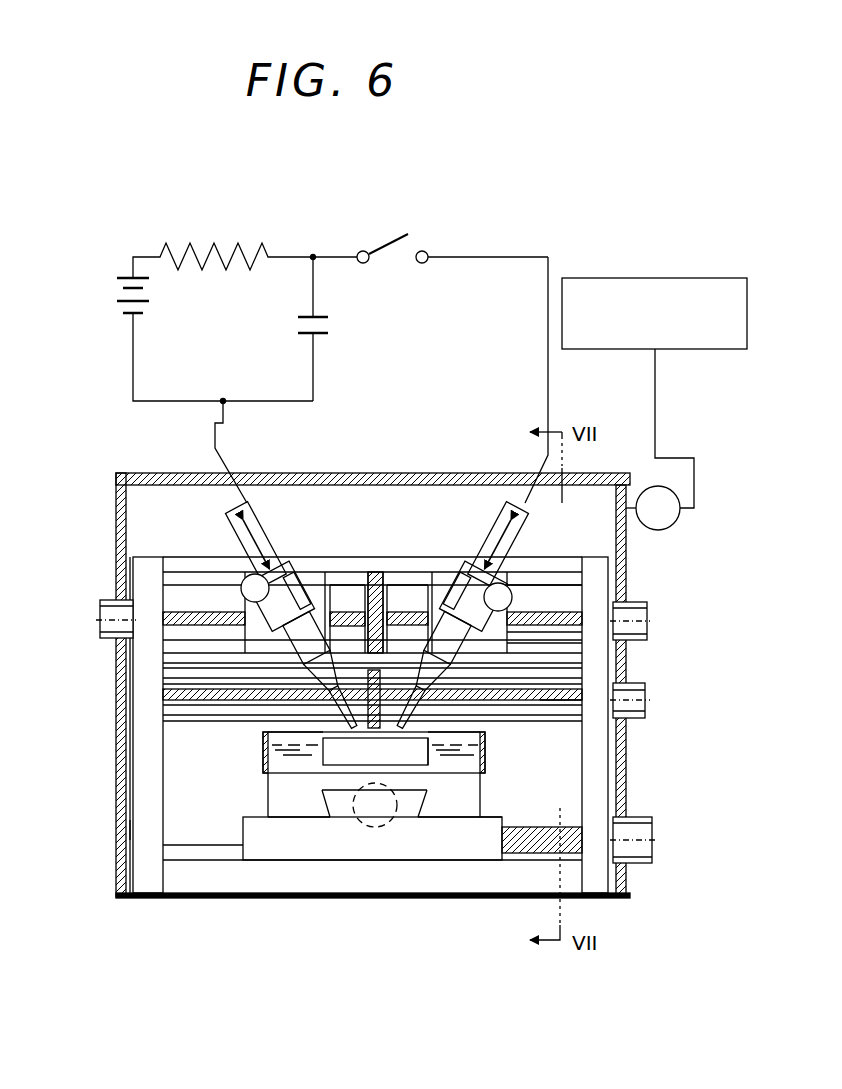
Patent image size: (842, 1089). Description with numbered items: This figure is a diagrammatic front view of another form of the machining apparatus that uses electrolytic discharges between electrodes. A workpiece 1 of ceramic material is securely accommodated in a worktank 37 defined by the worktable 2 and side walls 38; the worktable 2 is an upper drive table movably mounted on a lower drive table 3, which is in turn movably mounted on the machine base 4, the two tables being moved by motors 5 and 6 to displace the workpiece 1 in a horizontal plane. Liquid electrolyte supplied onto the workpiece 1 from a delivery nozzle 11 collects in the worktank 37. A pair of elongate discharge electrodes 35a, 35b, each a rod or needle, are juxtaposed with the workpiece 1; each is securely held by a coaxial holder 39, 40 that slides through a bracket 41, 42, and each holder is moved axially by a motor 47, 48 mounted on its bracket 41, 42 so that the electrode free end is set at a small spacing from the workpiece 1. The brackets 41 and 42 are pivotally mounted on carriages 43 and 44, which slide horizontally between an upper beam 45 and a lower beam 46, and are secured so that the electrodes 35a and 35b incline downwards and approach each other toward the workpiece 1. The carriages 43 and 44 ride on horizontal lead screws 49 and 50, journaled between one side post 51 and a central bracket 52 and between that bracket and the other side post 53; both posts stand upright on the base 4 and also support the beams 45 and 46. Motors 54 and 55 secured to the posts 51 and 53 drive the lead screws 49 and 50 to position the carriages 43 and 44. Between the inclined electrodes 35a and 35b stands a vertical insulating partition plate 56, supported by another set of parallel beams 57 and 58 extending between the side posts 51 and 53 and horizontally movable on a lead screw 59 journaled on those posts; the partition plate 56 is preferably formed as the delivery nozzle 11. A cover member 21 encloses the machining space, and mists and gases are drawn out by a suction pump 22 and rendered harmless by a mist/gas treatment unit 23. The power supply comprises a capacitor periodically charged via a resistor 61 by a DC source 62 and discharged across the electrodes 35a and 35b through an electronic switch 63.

The workpiece 1 is at (345, 815).
The worktable 2 is at (285, 802).
The lower drive table 3 is at (254, 872).
The machine base 4 is at (455, 880).
The motor 5 is at (385, 815).
The motor 6 is at (652, 836).
The delivery nozzle 11 is at (432, 740).
The cover member 21 is at (116, 762).
The suction pump 22 is at (674, 528).
The mist/gas treatment unit 23 is at (588, 350).
The discharge electrode 35a is at (333, 724).
The discharge electrode 35b is at (428, 728).
The worktank 37 is at (264, 752).
The side walls 38 is at (262, 776).
The holder 39 is at (262, 515).
The holder 40 is at (534, 518).
The bracket 41 is at (290, 575).
The bracket 42 is at (467, 565).
The carriage 43 is at (330, 574).
The carriage 44 is at (440, 580).
The upper beam 45 is at (178, 562).
The lower beam 46 is at (175, 657).
The motor 47 is at (245, 580).
The motor 48 is at (512, 585).
The lead screw 49 is at (222, 614).
The lead screw 50 is at (560, 612).
The side post 51 is at (140, 830).
The central bracket 52 is at (376, 572).
The side post 53 is at (614, 795).
The motor 54 is at (110, 600).
The motor 55 is at (648, 616).
The partition plate 56 is at (390, 686).
The beam 57 is at (575, 673).
The beam 58 is at (572, 717).
The lead screw 59 is at (552, 705).
The resistor 61 is at (232, 243).
The DC source 62 is at (115, 292).
The switch 63 is at (420, 240).